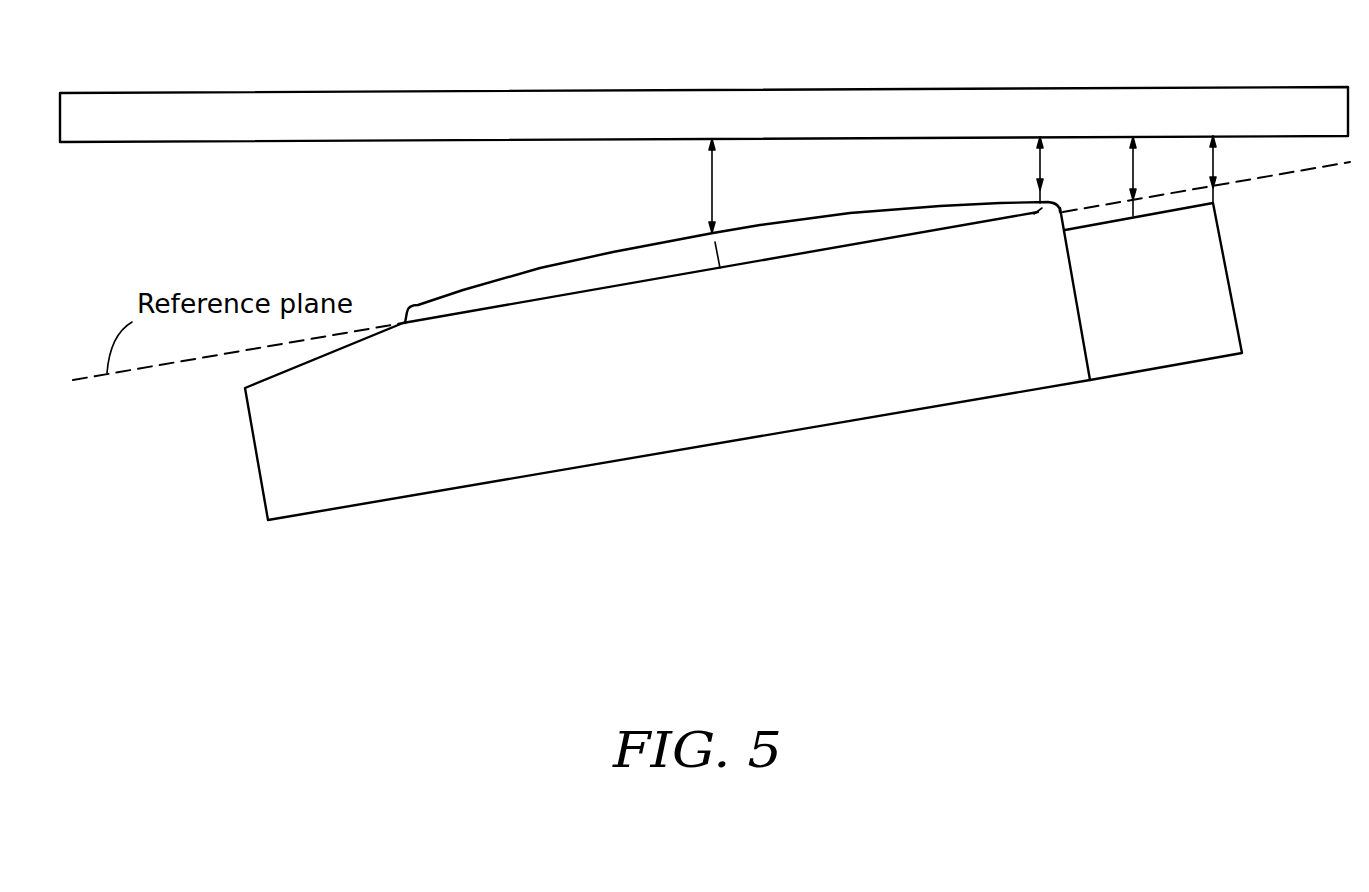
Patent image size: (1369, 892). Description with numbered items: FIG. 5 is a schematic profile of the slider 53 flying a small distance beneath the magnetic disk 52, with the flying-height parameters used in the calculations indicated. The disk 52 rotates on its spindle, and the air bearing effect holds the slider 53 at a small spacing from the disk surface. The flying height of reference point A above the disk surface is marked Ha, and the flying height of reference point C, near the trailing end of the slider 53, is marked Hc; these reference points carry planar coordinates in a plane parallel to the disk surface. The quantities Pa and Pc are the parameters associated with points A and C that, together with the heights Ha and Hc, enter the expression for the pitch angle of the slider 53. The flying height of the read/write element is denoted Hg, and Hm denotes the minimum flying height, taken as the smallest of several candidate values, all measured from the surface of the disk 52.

The magnetic disk 52 is at (542, 90).
The slider 53 is at (820, 418).
The flying height of reference point A Ha is at (693, 186).
The flying height of reference point C Hc is at (1019, 170).
The flying height of the read/write element Hg is at (1112, 176).
The minimum flying height Hm is at (1235, 169).
The crown term at reference point A Pa is at (713, 270).
The crown term at reference point C Pc is at (1038, 212).